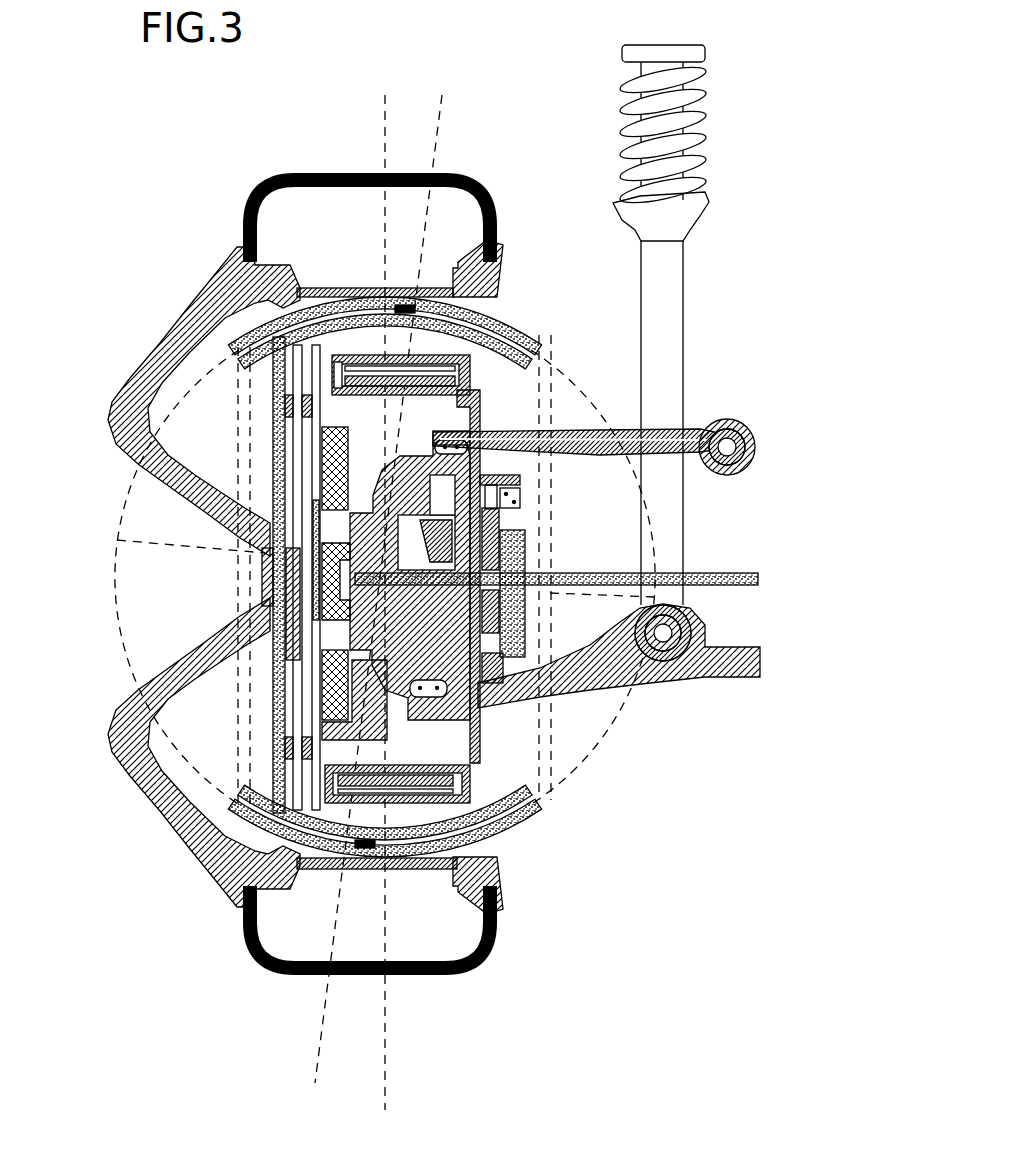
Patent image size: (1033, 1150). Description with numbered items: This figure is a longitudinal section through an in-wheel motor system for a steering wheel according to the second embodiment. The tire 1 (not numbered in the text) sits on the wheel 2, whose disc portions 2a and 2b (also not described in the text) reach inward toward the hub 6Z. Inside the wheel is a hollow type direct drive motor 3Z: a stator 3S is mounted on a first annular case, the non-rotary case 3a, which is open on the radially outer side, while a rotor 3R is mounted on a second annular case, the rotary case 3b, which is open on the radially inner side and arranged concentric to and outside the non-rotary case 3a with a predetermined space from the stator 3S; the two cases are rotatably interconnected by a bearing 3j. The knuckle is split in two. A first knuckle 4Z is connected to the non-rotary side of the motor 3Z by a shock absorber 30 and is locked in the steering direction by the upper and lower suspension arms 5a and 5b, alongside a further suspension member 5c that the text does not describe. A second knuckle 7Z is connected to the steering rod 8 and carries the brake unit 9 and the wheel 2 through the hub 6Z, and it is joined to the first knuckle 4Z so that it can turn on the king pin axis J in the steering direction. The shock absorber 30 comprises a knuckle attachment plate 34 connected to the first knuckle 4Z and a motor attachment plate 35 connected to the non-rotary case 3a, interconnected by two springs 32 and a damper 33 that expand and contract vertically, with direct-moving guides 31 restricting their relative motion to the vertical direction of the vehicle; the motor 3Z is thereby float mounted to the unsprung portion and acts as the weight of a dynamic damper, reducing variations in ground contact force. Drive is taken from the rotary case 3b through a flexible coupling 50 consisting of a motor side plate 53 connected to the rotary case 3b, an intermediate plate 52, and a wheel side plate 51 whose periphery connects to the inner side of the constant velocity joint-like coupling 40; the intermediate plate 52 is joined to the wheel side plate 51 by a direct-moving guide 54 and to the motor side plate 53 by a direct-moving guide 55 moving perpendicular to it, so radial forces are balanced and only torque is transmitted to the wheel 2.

The tire 1 is at (490, 178).
The wheel 2 is at (267, 573).
The wheel disc upper portion 2a is at (240, 280).
The wheel disc lower portion 2b is at (112, 748).
The first annular case (non-rotary case) 3a is at (470, 388).
The second annular case (rotary case) 3b is at (335, 365).
The bearing 3j is at (520, 325).
The rotor 3R is at (350, 350).
The stator 3S is at (373, 362).
The hollow type direct drive motor 3Z is at (472, 352).
The first knuckle 4Z is at (372, 505).
The upper suspension arm 5a is at (745, 418).
The lower suspension arm 5b is at (747, 643).
The strut 5c is at (683, 293).
The hub 6Z is at (325, 598).
The second knuckle 7Z is at (322, 561).
The steering rod 8 is at (733, 573).
The brake unit 9 is at (328, 778).
The shock absorber 30 is at (470, 742).
The direct-moving guides 31 is at (521, 479).
The springs 32 is at (500, 522).
The damper 33 is at (527, 605).
The knuckle attachment plate 34 is at (433, 725).
The motor attachment plate 35 is at (475, 428).
The constant velocity joint-like coupling 40 is at (536, 336).
The flexible coupling 50 is at (276, 490).
The wheel side plate 51 is at (282, 382).
The intermediate plate 52 is at (316, 440).
The motor side plate 53 is at (313, 805).
The direct-moving guide 54 is at (297, 405).
The direct-moving guide 55 is at (314, 398).
The king pin axis J is at (390, 598).